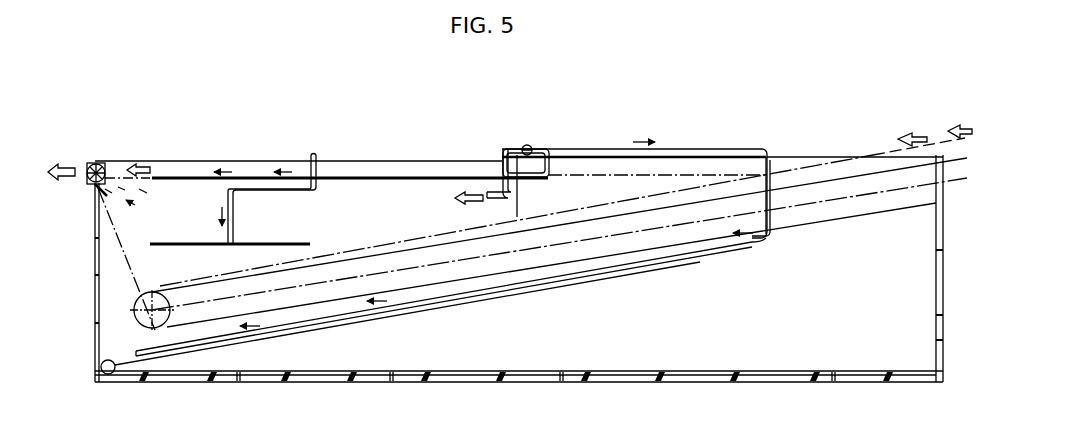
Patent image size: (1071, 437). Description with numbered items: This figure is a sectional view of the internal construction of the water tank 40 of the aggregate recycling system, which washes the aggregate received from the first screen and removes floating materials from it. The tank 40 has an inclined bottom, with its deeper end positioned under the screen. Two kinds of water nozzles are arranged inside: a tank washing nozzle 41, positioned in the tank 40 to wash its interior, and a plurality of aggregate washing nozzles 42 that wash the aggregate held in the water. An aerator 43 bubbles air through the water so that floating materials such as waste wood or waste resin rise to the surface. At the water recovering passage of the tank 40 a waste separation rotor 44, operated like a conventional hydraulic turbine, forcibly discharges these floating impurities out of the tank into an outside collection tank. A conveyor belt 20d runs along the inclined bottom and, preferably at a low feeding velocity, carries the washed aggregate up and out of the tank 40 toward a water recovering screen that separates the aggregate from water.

The water tank 40 is at (694, 108).
The tank washing nozzle 41 is at (472, 288).
The aggregate washing nozzles 42 is at (498, 193).
The aerator 43 is at (313, 152).
The waste separation rotor 44 is at (100, 163).
The conveyor belt 20d is at (608, 238).